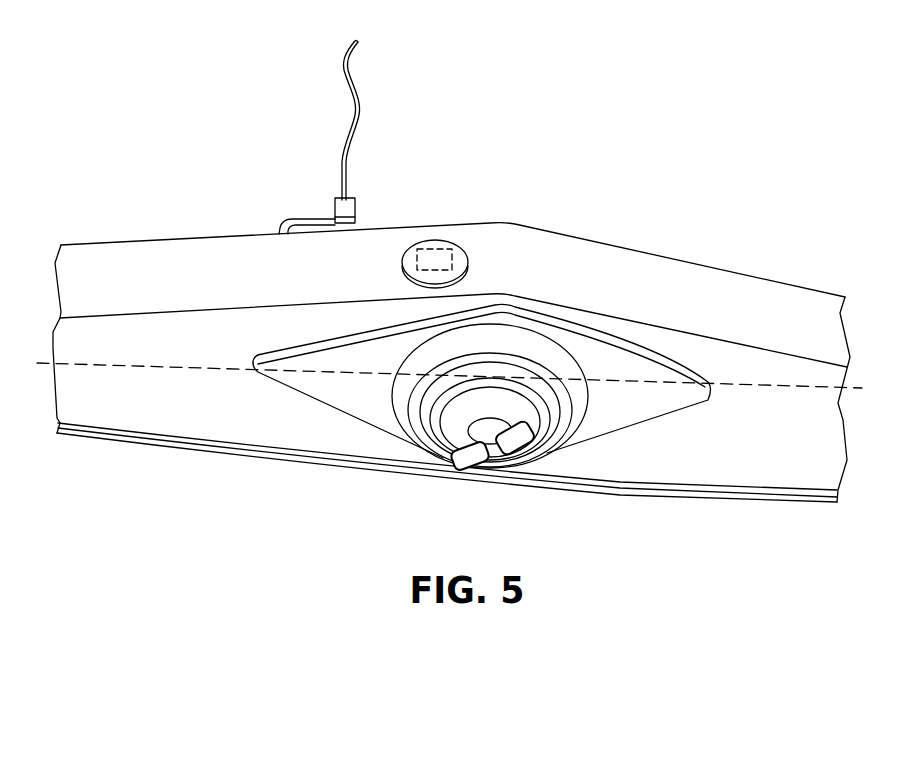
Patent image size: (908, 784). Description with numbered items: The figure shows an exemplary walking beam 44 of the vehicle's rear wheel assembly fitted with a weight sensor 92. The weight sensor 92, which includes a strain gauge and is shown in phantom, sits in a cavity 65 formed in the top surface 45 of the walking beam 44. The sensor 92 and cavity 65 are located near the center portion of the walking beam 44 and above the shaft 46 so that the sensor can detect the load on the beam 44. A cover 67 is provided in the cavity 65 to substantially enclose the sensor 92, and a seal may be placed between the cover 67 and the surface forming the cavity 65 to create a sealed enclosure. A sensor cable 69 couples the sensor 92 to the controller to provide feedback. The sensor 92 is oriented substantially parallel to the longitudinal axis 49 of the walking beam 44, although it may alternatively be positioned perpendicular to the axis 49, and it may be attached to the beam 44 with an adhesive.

The walking beam 44 is at (735, 243).
The top surface 45 is at (598, 263).
The shaft 46 is at (553, 452).
The longitudinal axis 49 is at (830, 387).
The cavity 65 is at (397, 267).
The cover 67 is at (403, 260).
The sensor cable 69 is at (345, 73).
The weight sensor 92 is at (435, 250).